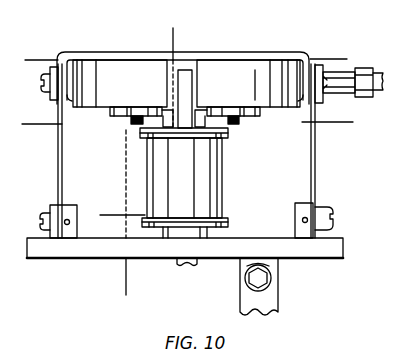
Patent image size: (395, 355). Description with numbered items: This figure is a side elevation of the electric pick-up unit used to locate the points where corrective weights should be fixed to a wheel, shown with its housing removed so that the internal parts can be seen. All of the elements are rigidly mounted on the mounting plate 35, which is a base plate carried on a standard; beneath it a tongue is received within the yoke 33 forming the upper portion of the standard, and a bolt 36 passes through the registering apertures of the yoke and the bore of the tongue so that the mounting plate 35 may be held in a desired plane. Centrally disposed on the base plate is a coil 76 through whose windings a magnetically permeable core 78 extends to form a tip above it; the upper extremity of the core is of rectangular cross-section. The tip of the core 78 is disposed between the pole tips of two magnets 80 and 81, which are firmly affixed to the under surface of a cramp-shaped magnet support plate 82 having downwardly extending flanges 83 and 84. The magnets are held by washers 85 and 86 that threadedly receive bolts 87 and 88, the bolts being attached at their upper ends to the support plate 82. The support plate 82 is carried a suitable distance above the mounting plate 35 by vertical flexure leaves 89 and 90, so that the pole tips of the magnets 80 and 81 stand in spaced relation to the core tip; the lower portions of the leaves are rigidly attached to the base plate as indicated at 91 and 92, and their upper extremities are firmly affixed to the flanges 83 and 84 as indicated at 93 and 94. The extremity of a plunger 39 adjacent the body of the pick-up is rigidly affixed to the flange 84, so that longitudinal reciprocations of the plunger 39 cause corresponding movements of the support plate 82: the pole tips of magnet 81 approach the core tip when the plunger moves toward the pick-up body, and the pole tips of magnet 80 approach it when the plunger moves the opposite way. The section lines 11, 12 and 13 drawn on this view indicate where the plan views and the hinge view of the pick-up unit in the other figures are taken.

The section line 11— 11 is at (33, 122).
The section line 12— 12 is at (32, 58).
The section line 13— 13 is at (171, 42).
The yoke 33 is at (272, 305).
The mounting plate 35 is at (343, 245).
The bolt 36 is at (255, 278).
The plunger 39 is at (277, 263).
The coil 76 is at (217, 195).
The core 78 is at (186, 84).
The magnet 80 is at (120, 83).
The magnet 81 is at (248, 83).
The magnet support plate 82 is at (270, 51).
The flange 83 is at (64, 97).
The flange 84 is at (305, 100).
The washer 85 is at (122, 118).
The washer 86 is at (252, 117).
The bolt 87 is at (133, 128).
The bolt 88 is at (233, 125).
The vertical flexure leaf 89 is at (57, 157).
The vertical flexure leaf 90 is at (317, 163).
The leaf attachment 91 is at (50, 208).
The leaf attachment 92 is at (323, 208).
The leaf attachment 93 is at (43, 92).
The leaf attachment 94 is at (333, 75).